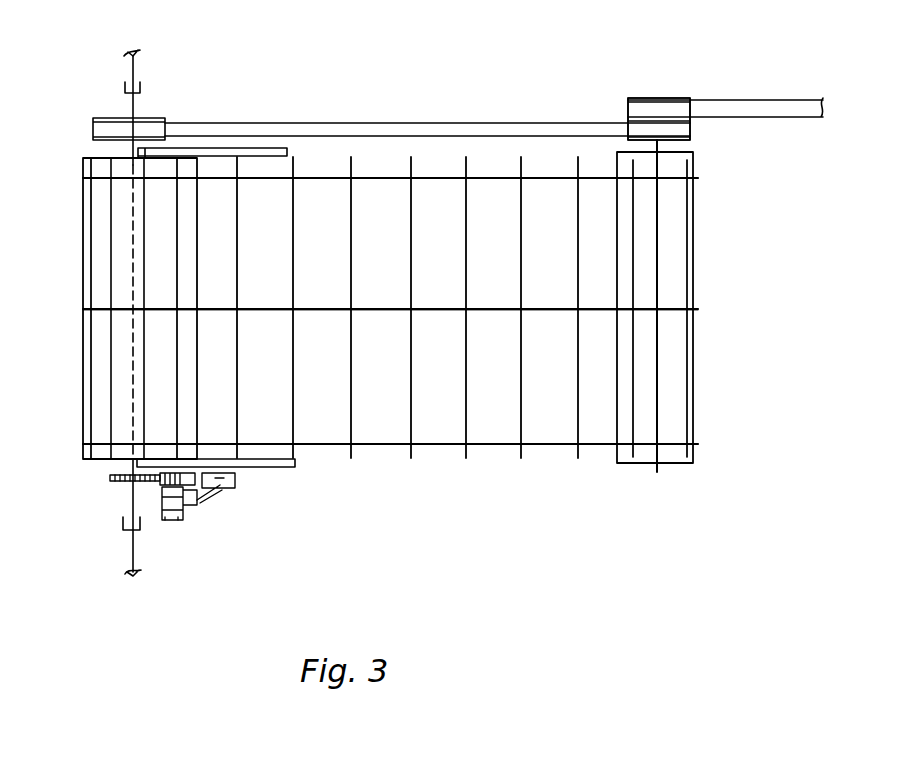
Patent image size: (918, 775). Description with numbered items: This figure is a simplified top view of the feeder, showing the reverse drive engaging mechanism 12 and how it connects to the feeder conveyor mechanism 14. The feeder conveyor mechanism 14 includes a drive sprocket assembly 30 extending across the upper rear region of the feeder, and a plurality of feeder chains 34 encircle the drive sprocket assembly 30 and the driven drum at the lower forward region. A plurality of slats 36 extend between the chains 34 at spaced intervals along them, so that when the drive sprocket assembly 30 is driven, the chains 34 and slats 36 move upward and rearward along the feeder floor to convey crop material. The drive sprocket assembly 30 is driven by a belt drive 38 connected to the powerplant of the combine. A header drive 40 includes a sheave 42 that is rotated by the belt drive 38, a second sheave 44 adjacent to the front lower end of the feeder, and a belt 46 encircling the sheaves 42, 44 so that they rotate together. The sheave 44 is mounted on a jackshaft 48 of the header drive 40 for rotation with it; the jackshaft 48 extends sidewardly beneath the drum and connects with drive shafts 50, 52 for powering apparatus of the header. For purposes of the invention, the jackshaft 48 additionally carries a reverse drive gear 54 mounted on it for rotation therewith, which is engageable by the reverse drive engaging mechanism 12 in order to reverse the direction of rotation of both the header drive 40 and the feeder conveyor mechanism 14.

The reverse drive engaging mechanism 12 is at (193, 524).
The feeder conveyor mechanism 14 is at (503, 446).
The drive sprocket assembly 30 is at (695, 456).
The feeder chains 34 is at (438, 178).
The slats 36 is at (351, 167).
The belt drive 38 is at (750, 100).
The header drive 40 is at (690, 138).
The sheave 42 is at (717, 131).
The sheave 44 is at (100, 118).
The belt 46 is at (505, 123).
The jackshaft 48 is at (139, 99).
The drive shaft 50 is at (130, 556).
The drive shaft 52 is at (133, 68).
The reverse drive gear 54 is at (110, 478).